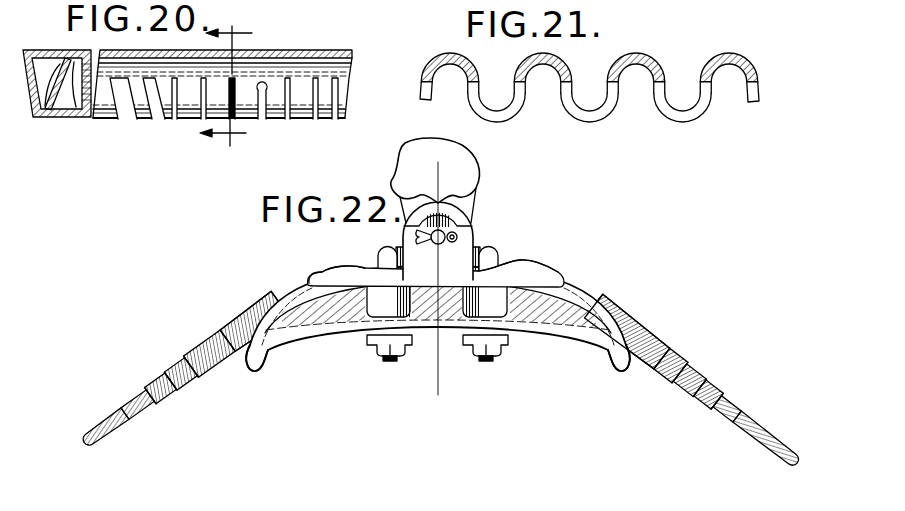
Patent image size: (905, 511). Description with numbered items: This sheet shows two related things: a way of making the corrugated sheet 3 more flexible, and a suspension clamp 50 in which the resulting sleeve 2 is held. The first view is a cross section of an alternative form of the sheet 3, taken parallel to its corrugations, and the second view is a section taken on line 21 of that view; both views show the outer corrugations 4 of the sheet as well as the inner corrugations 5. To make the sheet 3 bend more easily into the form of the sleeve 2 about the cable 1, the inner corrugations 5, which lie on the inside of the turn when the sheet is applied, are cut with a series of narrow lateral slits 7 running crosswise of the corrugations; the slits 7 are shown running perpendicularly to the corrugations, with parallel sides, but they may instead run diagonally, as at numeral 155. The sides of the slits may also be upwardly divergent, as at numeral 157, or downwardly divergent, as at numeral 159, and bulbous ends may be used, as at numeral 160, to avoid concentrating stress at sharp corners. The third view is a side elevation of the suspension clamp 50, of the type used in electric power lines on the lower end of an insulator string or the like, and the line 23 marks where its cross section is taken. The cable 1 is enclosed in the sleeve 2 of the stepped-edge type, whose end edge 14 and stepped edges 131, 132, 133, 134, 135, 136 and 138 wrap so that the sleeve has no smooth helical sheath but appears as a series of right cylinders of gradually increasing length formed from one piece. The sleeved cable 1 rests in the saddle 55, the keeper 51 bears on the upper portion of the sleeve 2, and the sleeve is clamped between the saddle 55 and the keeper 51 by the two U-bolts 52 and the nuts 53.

In FIG. 22, the cable 1 is at (112, 437).
In FIG. 22, the sleeve 2 is at (258, 300).
In FIG. 20, the corrugated sheet 3 is at (317, 55).
In FIG. 21, the corrugated sheet 3 is at (599, 91).
In FIG. 22, the corrugated sheet 3 is at (627, 300).
In FIG. 20, the loop of strip 4 is at (52, 55).
In FIG. 21, the loop of strip 4 is at (563, 63).
In FIG. 20, the inner corrugations 5 is at (164, 100).
In FIG. 21, the inner corrugations 5 is at (494, 121).
In FIG. 20, the slits or cuts 7 is at (203, 100).
In FIG. 21, the slits or cuts 7 is at (565, 99).
In FIG. 22, the end edge 14 is at (139, 414).
In FIG. 20, the section line 21— 21 is at (246, 85).
In FIG. 22, the section line 23— 23 is at (470, 170).
In FIG. 22, the suspension clamp 50 is at (519, 259).
In FIG. 22, the keeper 51 is at (376, 266).
In FIG. 22, the U-bolts 52 is at (388, 253).
In FIG. 22, the nuts 53 is at (379, 342).
In FIG. 22, the saddle 55 is at (520, 328).
In FIG. 22, the stepped edge 131 is at (158, 400).
In FIG. 22, the stepped edge 132 is at (146, 388).
In FIG. 22, the stepped edge 133 is at (192, 380).
In FIG. 22, the stepped edge 134 is at (170, 362).
In FIG. 22, the stepped edge 135 is at (229, 368).
In FIG. 22, the stepped edge 136 is at (192, 345).
In FIG. 22, the stepped edge 138 is at (226, 319).
In FIG. 20, the diagonal slit 155 is at (66, 118).
In FIG. 20, the upwardly divergent slit 157 is at (118, 119).
In FIG. 20, the downwardly divergent slit 159 is at (147, 113).
In FIG. 20, the bulbous-ended slit 160 is at (267, 100).